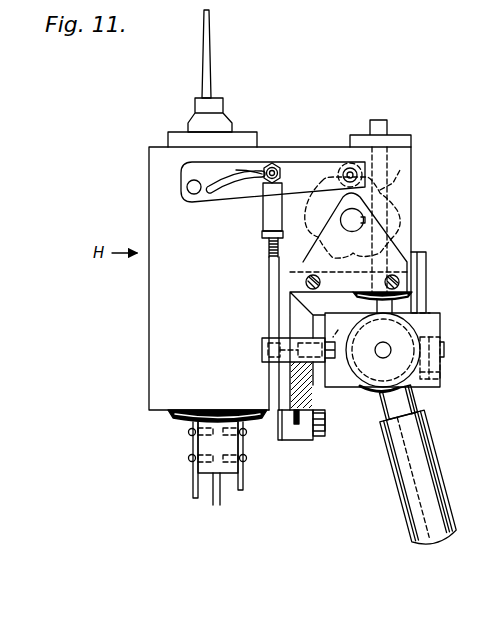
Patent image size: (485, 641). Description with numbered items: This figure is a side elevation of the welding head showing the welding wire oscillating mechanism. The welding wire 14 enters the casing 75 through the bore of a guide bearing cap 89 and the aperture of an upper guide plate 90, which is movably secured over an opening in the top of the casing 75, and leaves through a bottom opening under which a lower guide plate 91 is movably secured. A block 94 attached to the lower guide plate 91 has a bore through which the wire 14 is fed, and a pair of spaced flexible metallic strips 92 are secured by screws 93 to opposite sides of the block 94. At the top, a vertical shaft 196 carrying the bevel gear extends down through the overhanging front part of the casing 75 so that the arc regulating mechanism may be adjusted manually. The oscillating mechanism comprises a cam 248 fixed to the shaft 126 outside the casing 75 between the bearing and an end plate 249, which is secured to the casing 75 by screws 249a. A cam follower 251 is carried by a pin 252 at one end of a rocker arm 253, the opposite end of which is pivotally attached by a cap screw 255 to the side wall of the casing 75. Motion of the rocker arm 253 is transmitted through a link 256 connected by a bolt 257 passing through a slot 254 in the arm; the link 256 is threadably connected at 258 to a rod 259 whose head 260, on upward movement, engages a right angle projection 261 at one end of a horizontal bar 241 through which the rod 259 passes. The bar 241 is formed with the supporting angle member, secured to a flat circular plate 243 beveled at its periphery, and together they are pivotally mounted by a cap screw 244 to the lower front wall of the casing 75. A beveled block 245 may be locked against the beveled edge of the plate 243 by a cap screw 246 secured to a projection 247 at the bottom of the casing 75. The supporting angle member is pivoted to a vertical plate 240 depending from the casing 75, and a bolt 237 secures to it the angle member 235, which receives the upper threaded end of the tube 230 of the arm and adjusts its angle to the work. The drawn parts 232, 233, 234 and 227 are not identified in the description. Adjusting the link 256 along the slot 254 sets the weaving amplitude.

The welding wire 14 is at (203, 54).
The guide bearing cap 89 is at (197, 104).
The upper guide plate 90 is at (170, 138).
The casing 75 is at (148, 178).
The vertical shaft 196 is at (388, 123).
The cam 248 is at (398, 178).
The cap screw 255 is at (190, 190).
The rocker arm 253 is at (214, 207).
The slot 254 is at (241, 182).
The bolt 257 is at (271, 162).
The link 256 is at (282, 215).
The threaded connection 258 is at (265, 240).
The rod 259 is at (268, 290).
The cam follower 251 is at (350, 168).
The pin 252 is at (347, 171).
The end plate 249 is at (403, 258).
The shaft 126 is at (356, 217).
The screws 249a is at (386, 278).
The vertical plate 240 is at (427, 283).
The horizontal bar 241 is at (313, 381).
The head 260 is at (262, 357).
The right angle projection 261 is at (264, 340).
The flat circular plate 243 is at (313, 394).
The bolt 237 is at (388, 355).
The cap screw 244 is at (347, 326).
The cover 232 is at (404, 326).
The stud 233 is at (445, 343).
The plate 234 is at (441, 376).
The angle member 235 is at (374, 395).
The tube 230 is at (386, 418).
The handle 227 is at (402, 510).
The lower guide plate 91 is at (175, 418).
The block 94 is at (218, 447).
The flexible metallic strips 92 is at (193, 491).
The screws 93 is at (188, 435).
The projection 247 is at (285, 441).
The beveled block 245 is at (305, 441).
The cap screw 246 is at (323, 432).